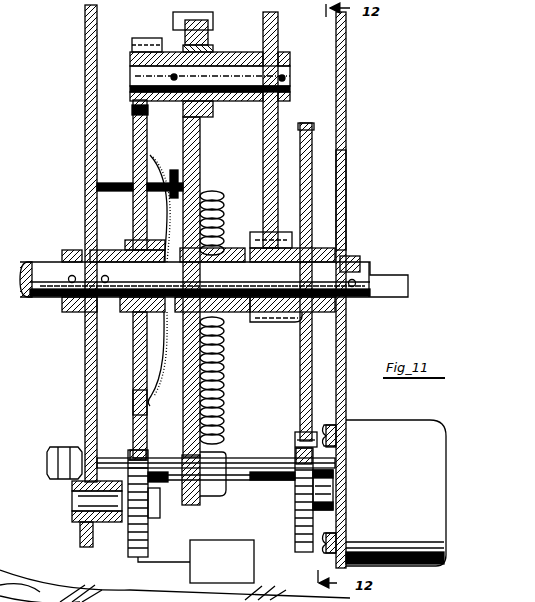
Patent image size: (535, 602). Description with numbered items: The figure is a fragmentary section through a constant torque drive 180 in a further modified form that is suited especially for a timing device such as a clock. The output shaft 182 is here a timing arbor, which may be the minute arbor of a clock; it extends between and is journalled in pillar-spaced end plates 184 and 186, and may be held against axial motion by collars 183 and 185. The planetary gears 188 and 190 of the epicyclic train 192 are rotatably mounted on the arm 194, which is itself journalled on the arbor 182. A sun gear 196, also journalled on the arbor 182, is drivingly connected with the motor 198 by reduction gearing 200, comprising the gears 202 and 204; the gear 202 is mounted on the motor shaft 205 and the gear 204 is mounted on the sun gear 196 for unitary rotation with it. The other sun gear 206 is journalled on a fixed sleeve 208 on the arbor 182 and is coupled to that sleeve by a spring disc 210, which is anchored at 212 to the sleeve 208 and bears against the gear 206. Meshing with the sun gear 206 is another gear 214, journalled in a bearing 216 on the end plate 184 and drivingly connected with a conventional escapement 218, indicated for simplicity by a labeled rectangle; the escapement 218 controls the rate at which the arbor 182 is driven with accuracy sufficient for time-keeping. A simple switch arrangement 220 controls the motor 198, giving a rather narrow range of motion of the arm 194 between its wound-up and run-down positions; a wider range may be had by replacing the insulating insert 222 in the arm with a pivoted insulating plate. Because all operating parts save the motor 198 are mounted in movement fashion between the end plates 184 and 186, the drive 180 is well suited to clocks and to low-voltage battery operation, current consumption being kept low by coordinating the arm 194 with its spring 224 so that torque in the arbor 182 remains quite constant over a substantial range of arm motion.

The constant torque drive 180 is at (350, 128).
The output shaft 182 is at (36, 270).
The collar 183 is at (72, 250).
The end plate 184 is at (85, 119).
The collar 185 is at (359, 258).
The end plate 186 is at (347, 200).
The planetary gear 188 is at (263, 206).
The planetary gear 190 is at (140, 38).
The epicyclic train 192 is at (131, 121).
The arm 194 is at (204, 146).
The sun gear 196 is at (277, 244).
The motor 198 is at (396, 436).
The reduction gearing 200 is at (344, 420).
The gear 202 is at (297, 520).
The gear 204 is at (301, 394).
The motor shaft 205 is at (335, 490).
The sun gear 206 is at (138, 402).
The fixed sleeve 208 is at (115, 252).
The spring disc 210 is at (163, 397).
The anchor 212 is at (140, 338).
The gear 214 is at (149, 540).
The bearing 216 is at (104, 525).
The escapement 218 is at (221, 541).
The switch arrangement 220 is at (213, 27).
The insulating insert 222 is at (210, 33).
The spring 224 is at (226, 376).